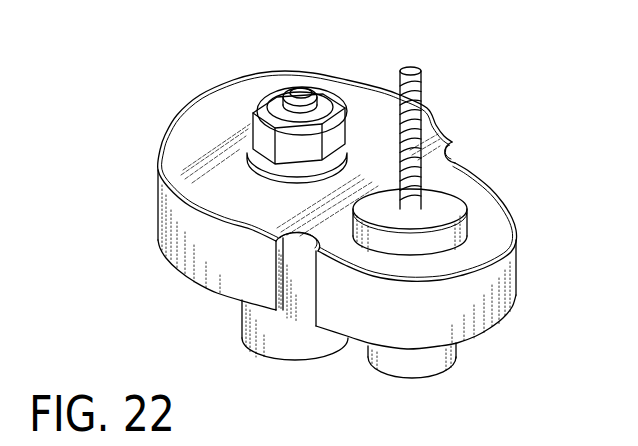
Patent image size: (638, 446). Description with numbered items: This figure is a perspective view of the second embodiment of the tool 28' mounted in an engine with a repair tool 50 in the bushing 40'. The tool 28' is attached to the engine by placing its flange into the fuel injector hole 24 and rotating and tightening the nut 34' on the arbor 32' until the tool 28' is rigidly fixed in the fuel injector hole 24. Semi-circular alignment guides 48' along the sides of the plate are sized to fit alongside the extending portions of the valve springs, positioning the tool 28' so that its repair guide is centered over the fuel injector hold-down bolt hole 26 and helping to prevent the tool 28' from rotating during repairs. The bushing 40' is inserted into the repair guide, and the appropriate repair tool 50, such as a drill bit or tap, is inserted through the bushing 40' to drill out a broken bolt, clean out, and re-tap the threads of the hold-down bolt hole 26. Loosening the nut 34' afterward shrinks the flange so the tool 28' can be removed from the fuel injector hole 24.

The tool 28' is at (282, 210).
The fuel injector hole/passage 24 is at (249, 328).
The fuel injector hold-down bolt hole 26 is at (431, 362).
The arbor 32' is at (302, 76).
The nut 34' is at (257, 117).
The bushing 40' is at (467, 222).
The alignment guides 48' is at (381, 259).
The repair tool 50 is at (422, 92).